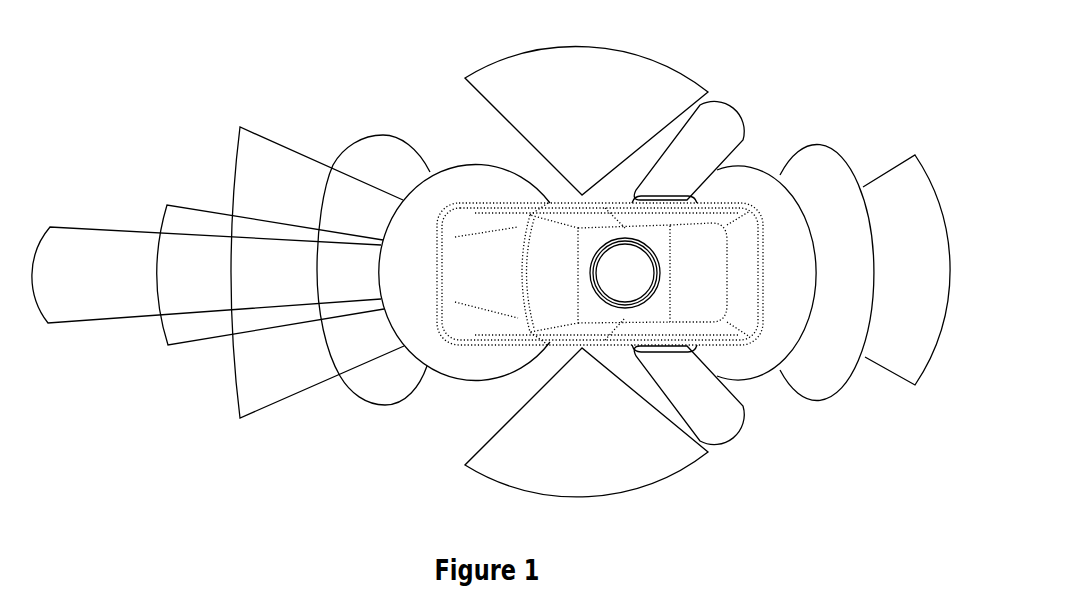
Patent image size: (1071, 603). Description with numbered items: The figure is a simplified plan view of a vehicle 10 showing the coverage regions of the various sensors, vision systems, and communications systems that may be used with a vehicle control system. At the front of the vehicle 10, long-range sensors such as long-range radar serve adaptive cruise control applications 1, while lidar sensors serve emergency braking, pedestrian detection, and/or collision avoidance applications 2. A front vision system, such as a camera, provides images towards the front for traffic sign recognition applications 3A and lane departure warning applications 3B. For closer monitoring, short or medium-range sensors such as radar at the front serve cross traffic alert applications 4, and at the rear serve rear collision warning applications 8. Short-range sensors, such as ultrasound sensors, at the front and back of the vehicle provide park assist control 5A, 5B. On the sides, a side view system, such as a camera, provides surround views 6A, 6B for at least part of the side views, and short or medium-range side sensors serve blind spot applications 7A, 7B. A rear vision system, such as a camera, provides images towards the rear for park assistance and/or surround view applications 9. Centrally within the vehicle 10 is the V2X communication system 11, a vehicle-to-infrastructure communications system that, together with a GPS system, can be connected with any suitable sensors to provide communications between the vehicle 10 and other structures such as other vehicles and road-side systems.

The adaptive cruise control applications 1 is at (62, 324).
The emergency braking, pedestrian detection, and/or collision avoidance applications 2 is at (167, 204).
The traffic sign recognition applications 3A is at (240, 126).
The lane departure warning applications 3B is at (250, 417).
The cross traffic alert applications 4 is at (379, 405).
The park assist control 5A is at (412, 333).
The park assist control 5B is at (766, 333).
The surround view 6A is at (578, 141).
The surround view 6B is at (578, 461).
The blind spot applications 7A is at (652, 190).
The blind spot applications 7B is at (700, 426).
The rear collision warning applications 8 is at (819, 318).
The park assistance and/or surround view applications 9 is at (890, 340).
The vehicle 10 is at (484, 200).
The V2X communication system 11 is at (617, 290).